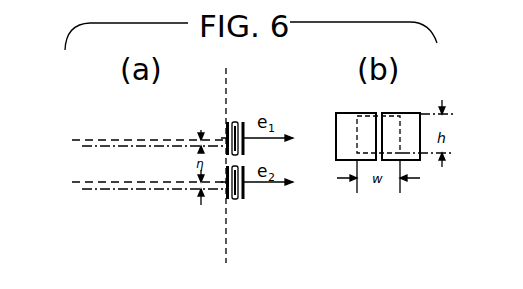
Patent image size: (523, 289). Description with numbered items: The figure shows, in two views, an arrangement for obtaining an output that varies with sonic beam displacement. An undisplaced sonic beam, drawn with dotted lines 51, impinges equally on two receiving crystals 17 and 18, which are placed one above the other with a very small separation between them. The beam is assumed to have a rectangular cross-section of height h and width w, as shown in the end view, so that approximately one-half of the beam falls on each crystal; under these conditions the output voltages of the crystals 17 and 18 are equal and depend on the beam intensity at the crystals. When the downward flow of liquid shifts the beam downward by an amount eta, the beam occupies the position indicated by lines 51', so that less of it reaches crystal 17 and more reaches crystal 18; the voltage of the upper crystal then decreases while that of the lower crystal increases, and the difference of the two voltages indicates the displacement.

The crystal 17 is at (235, 122).
The crystal 18 is at (234, 199).
The undisplaced sonic beam 51 is at (220, 150).
The displaced sonic beam 51' is at (153, 168).